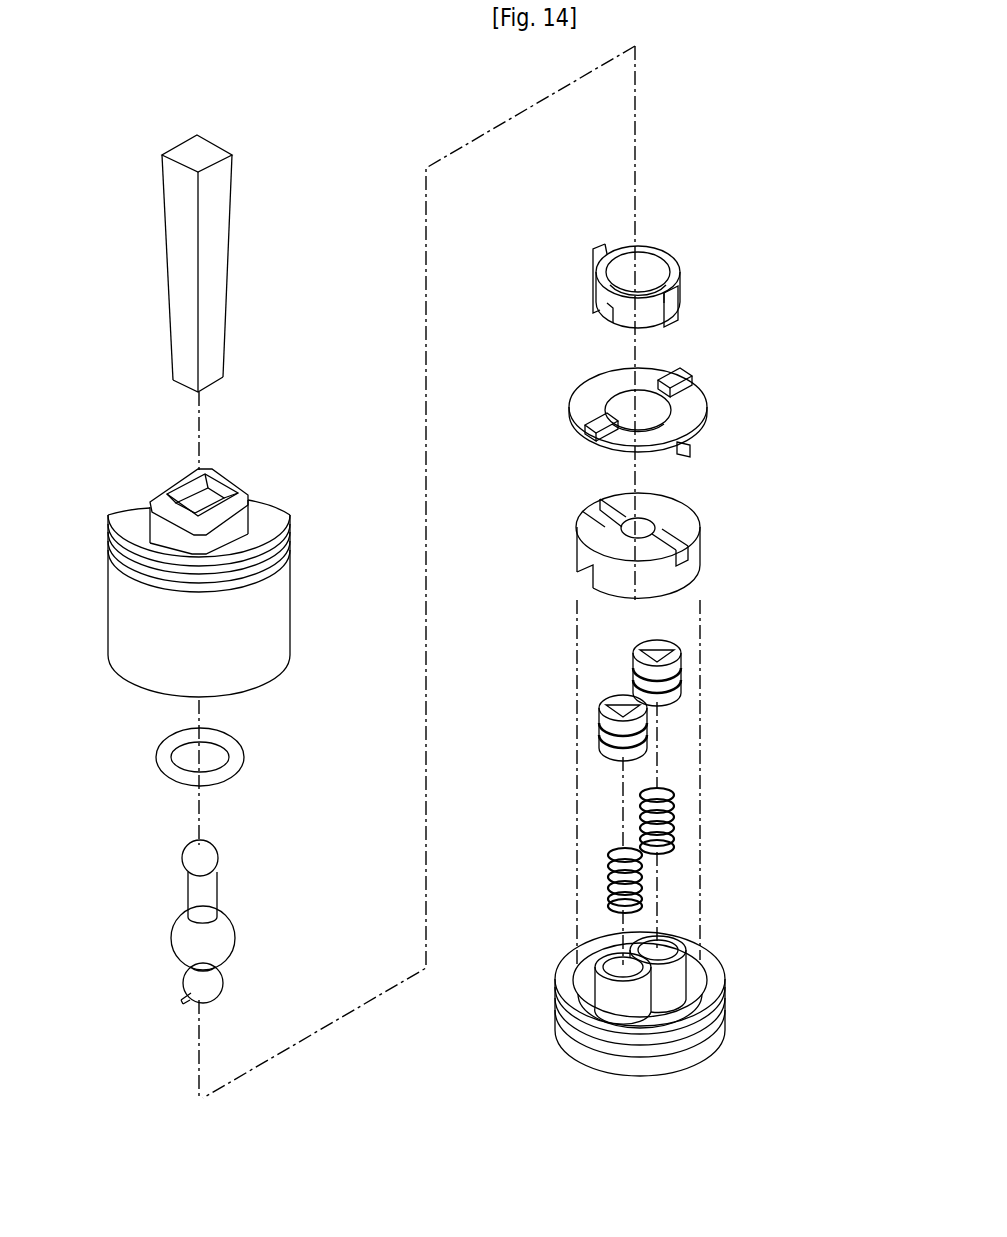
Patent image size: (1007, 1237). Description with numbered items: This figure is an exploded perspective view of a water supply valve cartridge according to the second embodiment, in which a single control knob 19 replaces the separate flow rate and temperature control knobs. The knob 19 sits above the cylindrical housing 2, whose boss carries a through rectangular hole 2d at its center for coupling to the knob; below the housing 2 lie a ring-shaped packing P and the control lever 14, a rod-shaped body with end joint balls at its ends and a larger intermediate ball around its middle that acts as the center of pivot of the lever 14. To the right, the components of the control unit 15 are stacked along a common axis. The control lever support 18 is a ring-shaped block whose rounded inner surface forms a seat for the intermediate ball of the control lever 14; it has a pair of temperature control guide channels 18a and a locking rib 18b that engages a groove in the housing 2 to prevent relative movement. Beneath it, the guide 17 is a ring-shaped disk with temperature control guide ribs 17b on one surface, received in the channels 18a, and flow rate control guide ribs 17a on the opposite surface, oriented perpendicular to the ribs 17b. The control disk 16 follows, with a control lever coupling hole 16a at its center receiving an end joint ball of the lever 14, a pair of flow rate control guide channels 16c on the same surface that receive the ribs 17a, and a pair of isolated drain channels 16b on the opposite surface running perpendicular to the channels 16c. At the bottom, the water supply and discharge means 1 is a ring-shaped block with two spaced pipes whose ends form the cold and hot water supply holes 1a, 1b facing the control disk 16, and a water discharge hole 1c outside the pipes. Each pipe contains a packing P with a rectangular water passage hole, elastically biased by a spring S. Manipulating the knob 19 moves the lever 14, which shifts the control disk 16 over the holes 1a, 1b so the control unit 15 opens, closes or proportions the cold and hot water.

The water supply and discharge means 1 is at (651, 990).
The cold water supply hole 1a is at (667, 948).
The hot water supply hole 1b is at (600, 965).
The water discharge hole 1c is at (597, 1012).
The housing 2 is at (229, 544).
The through rectangular hole 2d is at (185, 492).
The control lever 14 is at (203, 893).
The control unit 15 is at (478, 393).
The control disk 16 is at (637, 584).
The control lever coupling hole 16a is at (650, 520).
The drain channels 16b is at (585, 570).
The flow rate control guide channels 16c is at (690, 560).
The guide 17 is at (647, 386).
The flow rate control guide ribs 17a is at (700, 450).
The temperature control guide ribs 17b is at (680, 365).
The control lever support 18 is at (644, 255).
The temperature control guide channels 18a is at (608, 320).
The locking rib 18b is at (675, 307).
The control knob 19 is at (215, 242).
The packing P is at (227, 775).
The spring S is at (640, 880).